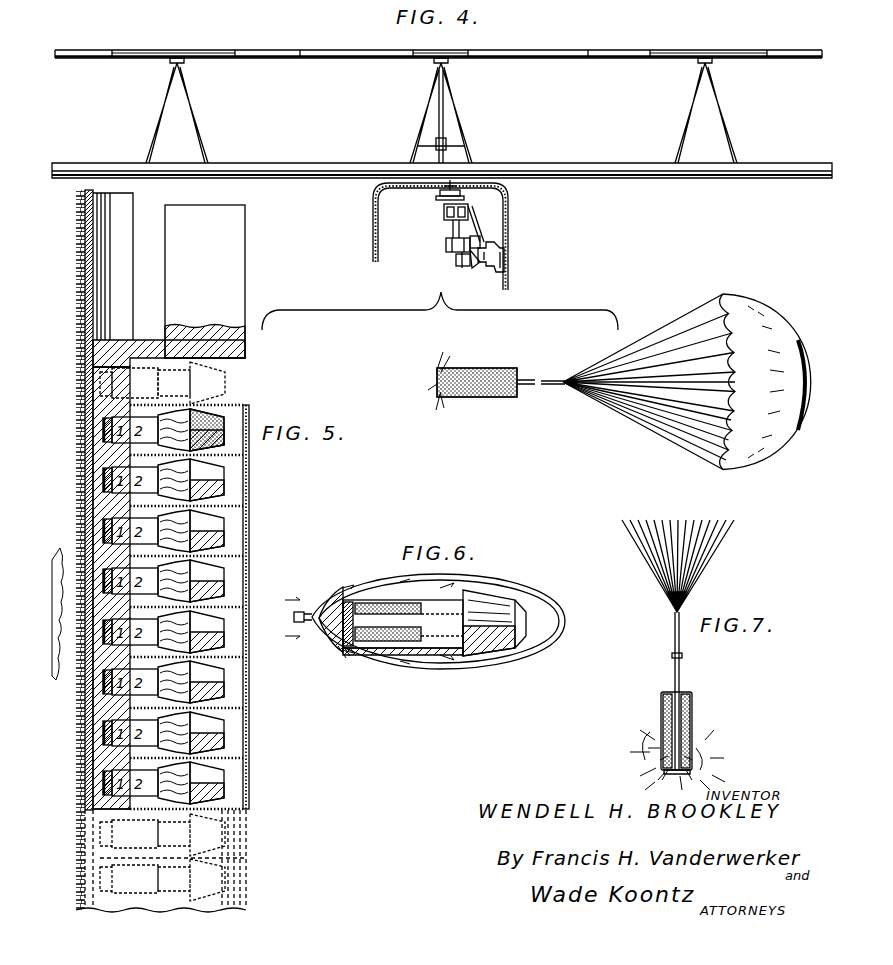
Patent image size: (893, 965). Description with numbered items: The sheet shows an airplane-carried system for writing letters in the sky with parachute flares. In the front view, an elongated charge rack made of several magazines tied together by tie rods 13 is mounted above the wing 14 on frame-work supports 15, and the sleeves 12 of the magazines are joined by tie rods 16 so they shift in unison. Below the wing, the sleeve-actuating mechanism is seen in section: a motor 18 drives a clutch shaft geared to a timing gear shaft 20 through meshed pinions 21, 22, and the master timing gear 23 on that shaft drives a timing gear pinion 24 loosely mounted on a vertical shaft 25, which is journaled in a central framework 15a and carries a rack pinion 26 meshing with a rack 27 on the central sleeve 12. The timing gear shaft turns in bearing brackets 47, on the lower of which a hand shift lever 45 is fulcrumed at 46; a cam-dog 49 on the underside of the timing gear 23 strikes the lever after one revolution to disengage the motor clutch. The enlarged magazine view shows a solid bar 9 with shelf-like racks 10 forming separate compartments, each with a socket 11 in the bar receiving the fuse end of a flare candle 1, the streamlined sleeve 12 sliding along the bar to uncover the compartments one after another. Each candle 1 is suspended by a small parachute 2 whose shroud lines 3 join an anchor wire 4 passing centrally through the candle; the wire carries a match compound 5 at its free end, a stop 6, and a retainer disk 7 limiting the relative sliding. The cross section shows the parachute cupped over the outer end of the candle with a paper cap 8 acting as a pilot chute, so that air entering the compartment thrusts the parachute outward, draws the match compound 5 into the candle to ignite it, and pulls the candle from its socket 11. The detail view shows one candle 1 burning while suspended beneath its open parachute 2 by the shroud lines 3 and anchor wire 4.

In FIG. 5, the flare candle 1 is at (238, 276).
In FIG. 6, the flare candle 1 is at (390, 600).
In FIG. 7, the flare candle 1 is at (696, 712).
In FIG. 5, the parachute 2 is at (765, 306).
In FIG. 6, the parachute 2 is at (470, 654).
In FIG. 5, the shroud lines 3 is at (641, 404).
In FIG. 7, the shroud lines 3 is at (718, 548).
In FIG. 5, the anchor wire 4 is at (556, 376).
In FIG. 7, the anchor wire 4 is at (675, 632).
In FIG. 5, the match compound 5 is at (103, 430).
In FIG. 6, the match compound 5 is at (357, 600).
In FIG. 7, the match compound 5 is at (698, 742).
In FIG. 5, the abutment or stop 6 is at (78, 384).
In FIG. 7, the abutment or stop 6 is at (682, 658).
In FIG. 5, the retainer disk 7 is at (103, 740).
In FIG. 6, the retainer disk 7 is at (338, 648).
In FIG. 5, the paper cap 8 is at (223, 430).
In FIG. 6, the paper cap 8 is at (522, 610).
In FIG. 5, the solid bar 9 is at (110, 352).
In FIG. 6, the solid bar 9 is at (332, 604).
In FIG. 6, the shelf-like racks or partitions 10 is at (528, 642).
In FIG. 5, the recess or socket 11 is at (98, 364).
In FIG. 6, the recess or socket 11 is at (350, 655).
In FIG. 4, the sleeve 12 is at (86, 50).
In FIG. 5, the sleeve 12 is at (248, 782).
In FIG. 6, the sleeve 12 is at (534, 594).
In FIG. 4, the tie rods 13 is at (156, 50).
In FIG. 4, the wing 14 is at (303, 163).
In FIG. 4, the frame-work supports 15 is at (198, 128).
In FIG. 4, the central framework 15a is at (469, 124).
In FIG. 5, the tie rods 16 is at (128, 240).
In FIG. 4, the motor 18 is at (505, 254).
In FIG. 4, the timing gear shaft 20 is at (452, 226).
In FIG. 4, the pinion 21 is at (468, 256).
In FIG. 4, the pinion 22 is at (456, 258).
In FIG. 4, the master timing gear 23 is at (470, 202).
In FIG. 4, the timing gear pinion 24 is at (440, 198).
In FIG. 4, the vertical shaft 25 is at (437, 114).
In FIG. 5, the rack pinion 26 is at (55, 623).
In FIG. 5, the rack 27 is at (78, 470).
In FIG. 6, the rack 27 is at (314, 619).
In FIG. 4, the hand shift lever 45 is at (482, 216).
In FIG. 4, the fulcrum 46 is at (480, 242).
In FIG. 4, the timing gear shaft bearing brackets 47 is at (446, 245).
In FIG. 4, the cam-dog 49 is at (486, 206).